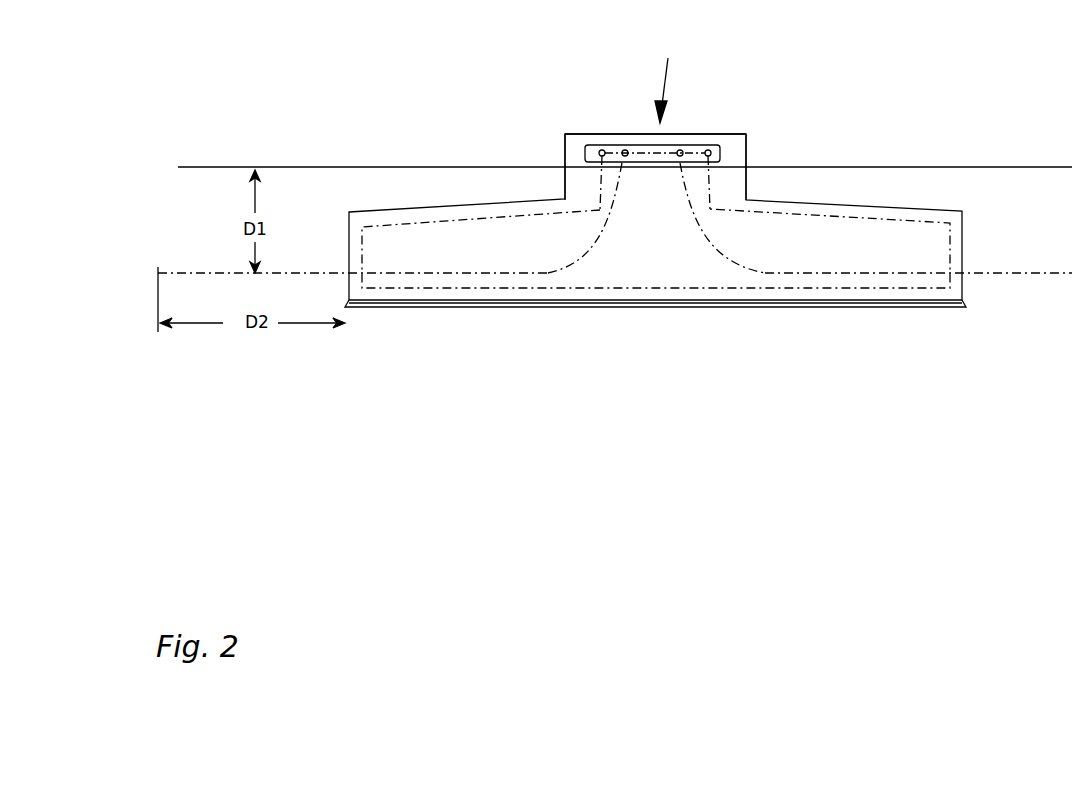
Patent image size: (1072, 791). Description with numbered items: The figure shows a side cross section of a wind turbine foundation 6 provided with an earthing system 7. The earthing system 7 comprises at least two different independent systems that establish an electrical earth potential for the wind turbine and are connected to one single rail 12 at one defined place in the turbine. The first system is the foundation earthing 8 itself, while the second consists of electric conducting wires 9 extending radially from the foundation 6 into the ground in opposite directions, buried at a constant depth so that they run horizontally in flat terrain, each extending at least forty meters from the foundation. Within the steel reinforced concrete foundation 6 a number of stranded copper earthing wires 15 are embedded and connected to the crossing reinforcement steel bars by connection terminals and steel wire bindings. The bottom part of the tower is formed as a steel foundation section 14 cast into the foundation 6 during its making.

The foundation 6 is at (578, 190).
The earthing system 7 is at (665, 80).
The foundation earthing 8 is at (563, 289).
The wires 9 is at (1017, 273).
The rail 12 is at (613, 150).
The steel foundation section 14 is at (737, 147).
The copper earthing wire 15 is at (798, 290).